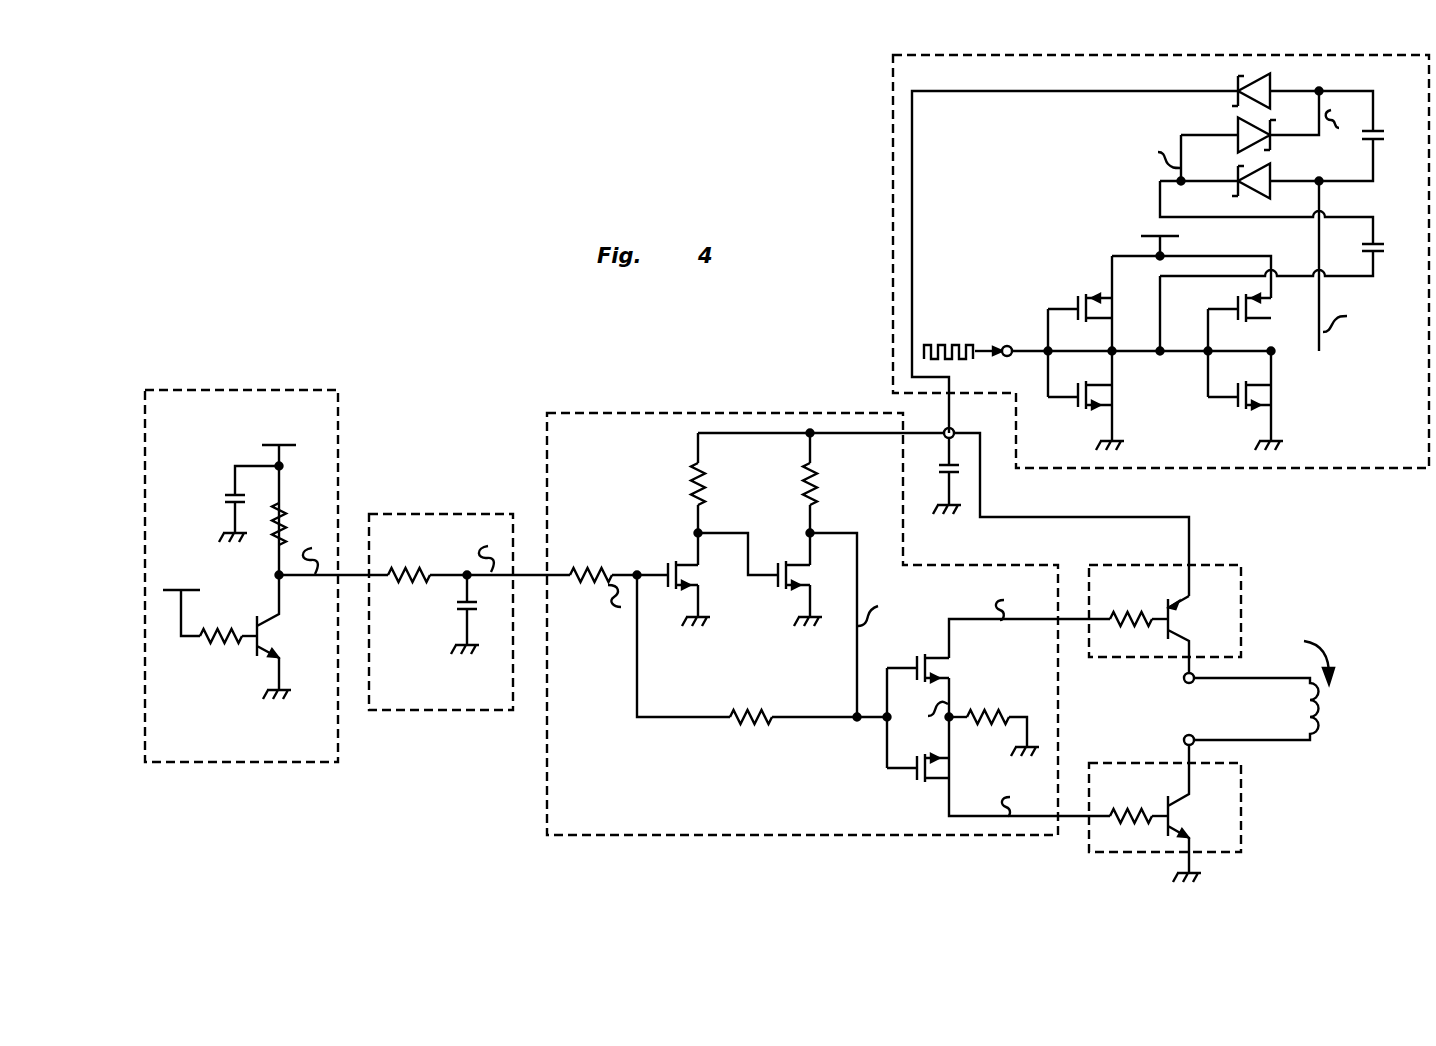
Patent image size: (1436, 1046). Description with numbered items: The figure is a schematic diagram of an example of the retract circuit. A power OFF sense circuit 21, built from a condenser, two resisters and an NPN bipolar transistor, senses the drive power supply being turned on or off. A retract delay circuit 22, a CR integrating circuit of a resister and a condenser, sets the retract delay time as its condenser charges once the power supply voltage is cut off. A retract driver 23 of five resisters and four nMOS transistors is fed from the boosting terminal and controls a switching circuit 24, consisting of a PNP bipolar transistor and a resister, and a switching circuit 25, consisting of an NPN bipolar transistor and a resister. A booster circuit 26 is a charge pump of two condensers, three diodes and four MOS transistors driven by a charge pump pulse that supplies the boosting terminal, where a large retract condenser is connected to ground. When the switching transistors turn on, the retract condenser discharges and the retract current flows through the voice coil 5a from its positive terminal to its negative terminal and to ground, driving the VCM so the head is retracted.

The power OFF sense circuit 21 is at (316, 390).
The retract delay circuit 22 is at (480, 479).
The retract driver 23 is at (815, 376).
The switching circuit 24 is at (1246, 606).
The switching circuit 25 is at (1246, 805).
The booster circuit 26 is at (889, 95).
The voice coil 5a is at (1322, 706).